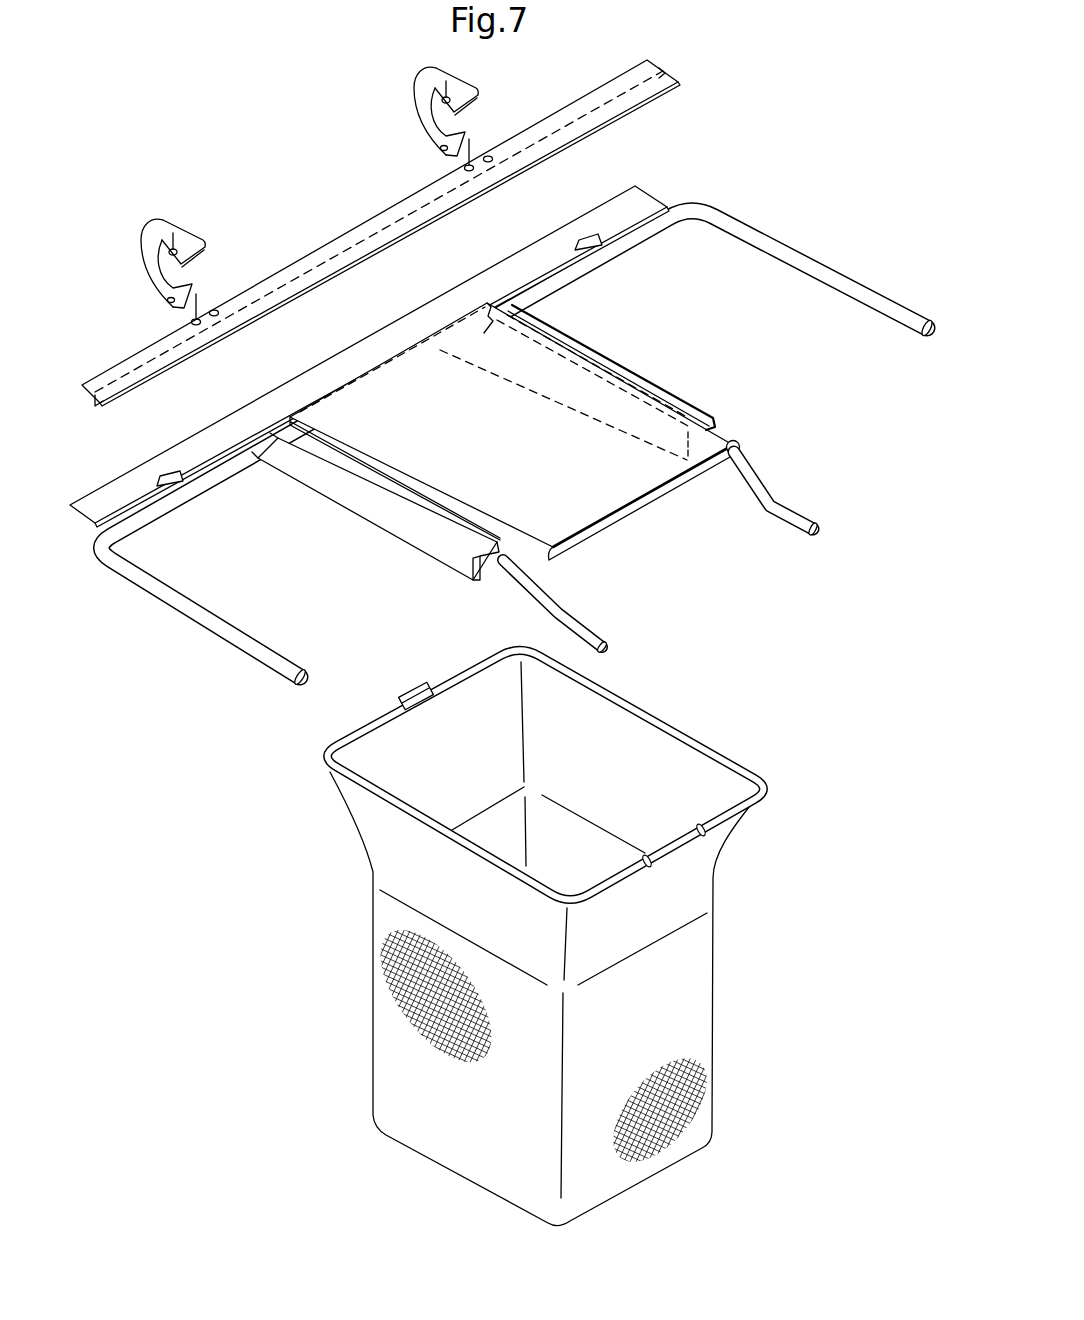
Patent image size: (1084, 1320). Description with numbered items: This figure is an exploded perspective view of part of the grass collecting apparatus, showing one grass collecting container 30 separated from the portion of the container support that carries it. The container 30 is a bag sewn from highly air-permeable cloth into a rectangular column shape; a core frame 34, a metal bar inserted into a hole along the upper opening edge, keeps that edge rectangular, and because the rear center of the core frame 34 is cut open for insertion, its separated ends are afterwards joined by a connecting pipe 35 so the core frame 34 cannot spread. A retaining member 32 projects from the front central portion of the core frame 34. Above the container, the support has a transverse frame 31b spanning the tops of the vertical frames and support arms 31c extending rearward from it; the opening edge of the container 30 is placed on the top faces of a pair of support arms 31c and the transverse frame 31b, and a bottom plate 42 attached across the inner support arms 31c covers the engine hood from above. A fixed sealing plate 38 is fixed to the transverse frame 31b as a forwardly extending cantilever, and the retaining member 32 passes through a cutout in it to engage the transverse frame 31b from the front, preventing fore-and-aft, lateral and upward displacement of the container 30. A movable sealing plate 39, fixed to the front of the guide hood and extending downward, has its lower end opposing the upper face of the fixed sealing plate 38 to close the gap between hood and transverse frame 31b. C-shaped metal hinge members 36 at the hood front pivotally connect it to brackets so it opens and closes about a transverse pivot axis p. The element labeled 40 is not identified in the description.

The grass collecting container 30 is at (713, 985).
The transverse frame 31b is at (228, 470).
The support arms 31c is at (838, 270).
The retaining member 32 is at (408, 686).
The core frame 34 is at (646, 710).
The connecting pipe 35 is at (677, 842).
The hinge member 36 is at (143, 258).
The fixed sealing plate 38 is at (290, 393).
The movable sealing plate 39 is at (113, 408).
The clip tab 40 is at (590, 240).
The bottom plate 42 is at (440, 378).
The pivot axis p is at (190, 290).